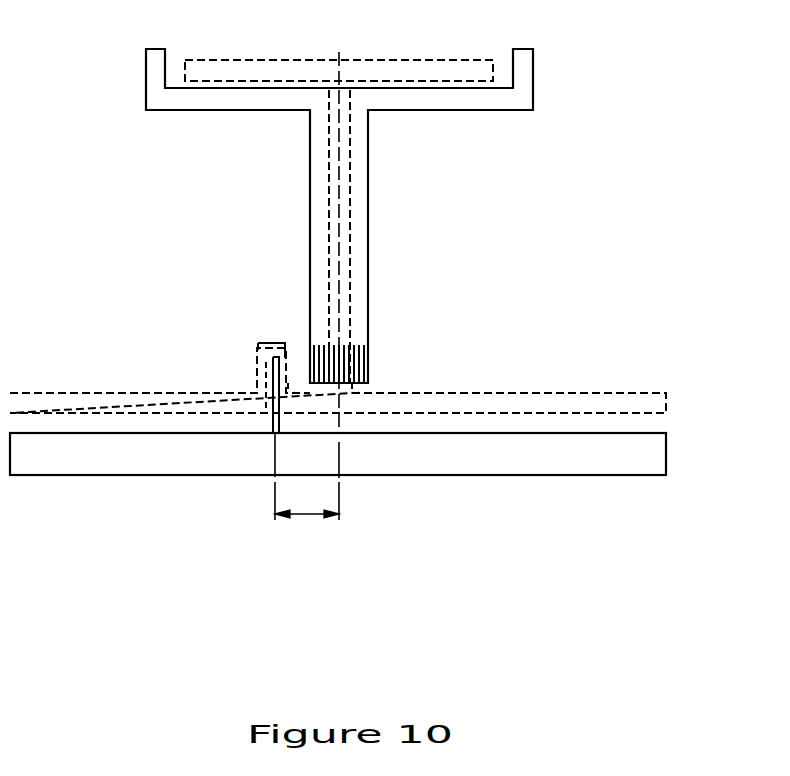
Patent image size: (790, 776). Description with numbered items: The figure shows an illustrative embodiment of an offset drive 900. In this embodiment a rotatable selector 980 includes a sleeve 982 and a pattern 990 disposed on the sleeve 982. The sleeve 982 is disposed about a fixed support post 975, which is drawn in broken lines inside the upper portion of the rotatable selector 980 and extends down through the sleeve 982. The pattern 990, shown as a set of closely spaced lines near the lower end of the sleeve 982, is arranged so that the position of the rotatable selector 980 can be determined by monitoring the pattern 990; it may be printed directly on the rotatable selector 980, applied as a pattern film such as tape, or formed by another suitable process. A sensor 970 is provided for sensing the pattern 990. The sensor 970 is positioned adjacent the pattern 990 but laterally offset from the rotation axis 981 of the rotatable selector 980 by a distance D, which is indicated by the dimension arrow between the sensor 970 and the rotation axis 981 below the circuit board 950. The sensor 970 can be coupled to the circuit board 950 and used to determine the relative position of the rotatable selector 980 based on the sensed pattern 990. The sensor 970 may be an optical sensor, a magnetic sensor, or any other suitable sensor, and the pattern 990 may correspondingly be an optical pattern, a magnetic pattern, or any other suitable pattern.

The offset drive 900 is at (283, 318).
The circuit board 950 is at (657, 450).
The sensor 970 is at (260, 364).
The fixed support post 975 is at (352, 86).
The rotatable selector 980 is at (153, 70).
The rotation axis 981 is at (340, 455).
The sleeve 982 is at (360, 210).
The pattern 990 is at (388, 354).
The distance D is at (304, 518).